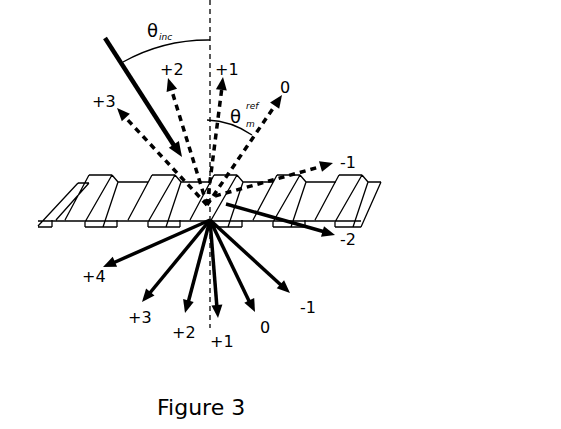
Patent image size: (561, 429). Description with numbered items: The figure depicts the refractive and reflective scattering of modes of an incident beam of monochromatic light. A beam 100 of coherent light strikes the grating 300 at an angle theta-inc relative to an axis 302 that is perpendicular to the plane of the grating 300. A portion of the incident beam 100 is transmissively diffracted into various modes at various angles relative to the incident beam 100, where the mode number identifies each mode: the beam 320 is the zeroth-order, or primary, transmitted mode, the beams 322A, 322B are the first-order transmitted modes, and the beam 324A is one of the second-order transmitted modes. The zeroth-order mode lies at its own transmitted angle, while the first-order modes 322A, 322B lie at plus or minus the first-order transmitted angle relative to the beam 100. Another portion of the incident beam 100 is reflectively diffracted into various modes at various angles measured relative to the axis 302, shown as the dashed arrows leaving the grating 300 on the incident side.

The beam 100 is at (130, 80).
The grating 300 is at (81, 149).
The axis 302 is at (210, 32).
The beam 320 is at (260, 301).
The beam 322A is at (223, 313).
The beam 322B is at (277, 273).
The beam 324A is at (182, 307).